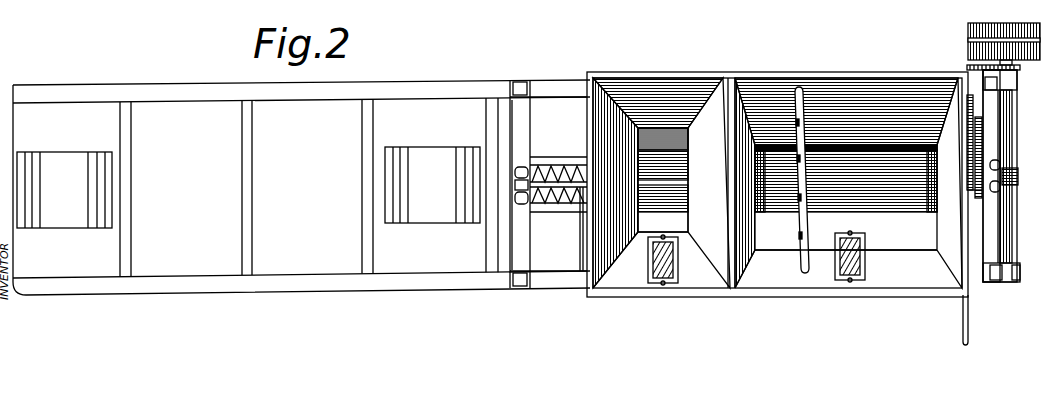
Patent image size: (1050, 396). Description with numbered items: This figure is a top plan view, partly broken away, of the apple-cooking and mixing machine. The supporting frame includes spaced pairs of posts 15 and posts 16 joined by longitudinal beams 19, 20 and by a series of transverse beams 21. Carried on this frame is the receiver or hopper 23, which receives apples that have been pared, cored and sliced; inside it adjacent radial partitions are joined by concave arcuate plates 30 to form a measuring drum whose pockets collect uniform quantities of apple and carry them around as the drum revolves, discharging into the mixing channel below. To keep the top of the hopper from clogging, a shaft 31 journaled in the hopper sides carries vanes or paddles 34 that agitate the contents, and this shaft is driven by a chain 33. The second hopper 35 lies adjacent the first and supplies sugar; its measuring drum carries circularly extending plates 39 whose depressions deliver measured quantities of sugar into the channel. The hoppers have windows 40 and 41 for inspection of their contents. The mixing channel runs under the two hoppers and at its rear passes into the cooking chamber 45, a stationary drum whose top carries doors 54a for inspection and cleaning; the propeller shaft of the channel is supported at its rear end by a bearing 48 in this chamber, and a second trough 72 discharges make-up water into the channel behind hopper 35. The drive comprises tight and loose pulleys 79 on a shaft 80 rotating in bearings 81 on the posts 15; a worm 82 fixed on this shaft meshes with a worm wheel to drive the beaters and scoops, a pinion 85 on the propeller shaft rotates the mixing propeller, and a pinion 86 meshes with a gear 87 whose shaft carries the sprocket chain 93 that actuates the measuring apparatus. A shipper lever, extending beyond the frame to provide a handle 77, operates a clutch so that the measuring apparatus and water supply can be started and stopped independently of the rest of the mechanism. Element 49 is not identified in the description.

The posts 15 is at (1000, 280).
The posts 16 is at (520, 80).
The longitudinal beam 19 is at (553, 88).
The longitudinal beam 20 is at (430, 84).
The transverse beams 21 is at (520, 137).
The receiver or hopper 23 is at (873, 62).
The plates 30 is at (848, 183).
The shaft 31 is at (806, 224).
The chain 33 is at (968, 66).
The vanes or paddles 34 is at (800, 237).
The second hopper 35 is at (665, 72).
The circularly extending plates 39 is at (663, 170).
The window 40 is at (865, 262).
The window 41 is at (648, 265).
The cooking container portion or chamber 45 is at (318, 115).
The bearing 48 is at (567, 154).
The bar 49 is at (560, 203).
The doors 54a is at (437, 143).
The second trough 72 is at (580, 238).
The handle 77 is at (963, 305).
The tight and loose pulleys 79 is at (968, 35).
The shaft 80 is at (1012, 237).
The bearings 81 is at (1012, 275).
The worm 82 is at (1012, 170).
The pinion 85 is at (525, 217).
The pinion 86 is at (967, 190).
The gear 87 is at (967, 120).
The sprocket chain 93 is at (975, 152).